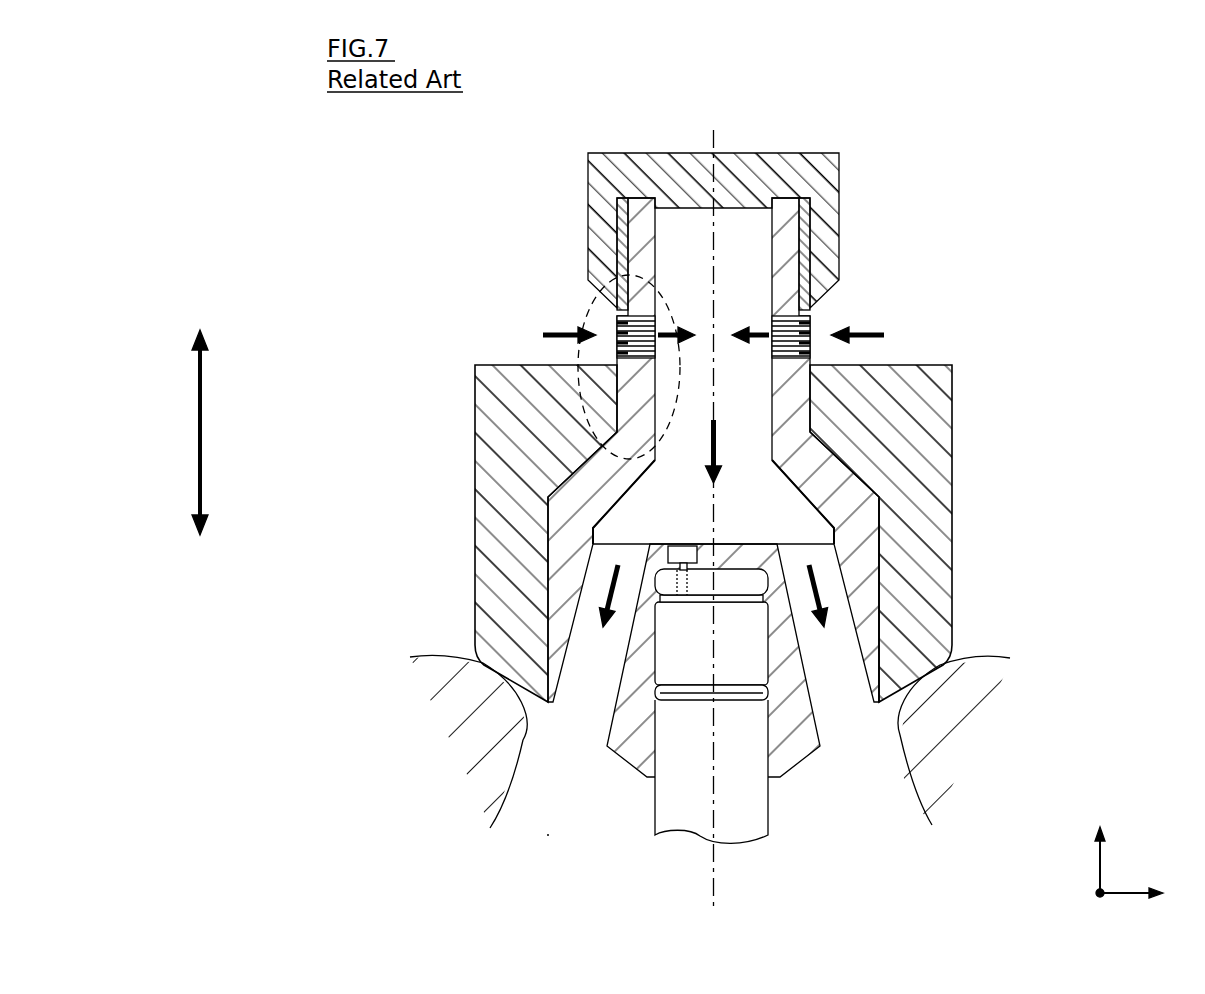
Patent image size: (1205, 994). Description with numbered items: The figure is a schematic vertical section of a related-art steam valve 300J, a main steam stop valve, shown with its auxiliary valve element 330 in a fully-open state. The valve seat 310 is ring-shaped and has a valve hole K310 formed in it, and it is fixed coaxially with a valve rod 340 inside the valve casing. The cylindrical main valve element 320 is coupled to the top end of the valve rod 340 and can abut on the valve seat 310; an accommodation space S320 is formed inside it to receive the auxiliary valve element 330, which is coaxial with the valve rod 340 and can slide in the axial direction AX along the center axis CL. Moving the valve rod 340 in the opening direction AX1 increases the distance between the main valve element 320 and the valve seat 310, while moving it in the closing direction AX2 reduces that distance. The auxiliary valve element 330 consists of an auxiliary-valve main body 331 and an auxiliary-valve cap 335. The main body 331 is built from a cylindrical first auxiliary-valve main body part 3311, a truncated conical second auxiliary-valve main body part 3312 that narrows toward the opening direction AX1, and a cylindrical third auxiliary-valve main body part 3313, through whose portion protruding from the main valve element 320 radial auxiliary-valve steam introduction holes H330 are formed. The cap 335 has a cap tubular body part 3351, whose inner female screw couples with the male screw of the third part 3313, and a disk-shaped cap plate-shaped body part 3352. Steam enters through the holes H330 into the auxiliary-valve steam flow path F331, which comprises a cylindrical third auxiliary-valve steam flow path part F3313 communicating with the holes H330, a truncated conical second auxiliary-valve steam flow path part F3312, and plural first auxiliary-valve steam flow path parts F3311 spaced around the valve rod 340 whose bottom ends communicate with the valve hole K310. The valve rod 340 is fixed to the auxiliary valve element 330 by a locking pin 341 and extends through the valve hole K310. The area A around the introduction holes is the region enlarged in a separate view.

The steam valve 300J is at (740, 54).
The auxiliary valve element 330 is at (1090, 182).
The auxiliary-valve cap 335 is at (1022, 153).
The cap plate-shaped body part 3352 is at (825, 170).
The cap tubular body part 3351 is at (830, 240).
The auxiliary-valve main body 331 is at (1025, 292).
The third auxiliary-valve main body part 3313 is at (812, 314).
The auxiliary-valve steam introduction hole H330 is at (813, 357).
The second auxiliary-valve main body part 3312 is at (852, 485).
The first auxiliary-valve main body part 3311 is at (872, 535).
The main valve element 320 is at (940, 638).
The accommodation space S320 is at (888, 598).
The valve seat 310 is at (982, 733).
The valve rod 340 is at (733, 828).
The locking pin 341 is at (686, 556).
The center axis CL is at (716, 907).
The area A is at (597, 300).
The auxiliary-valve steam flow path F331 is at (375, 248).
The third auxiliary-valve steam flow path part F3313 is at (668, 272).
The second auxiliary-valve steam flow path part F3312 is at (636, 505).
The first auxiliary-valve steam flow path part F3311 is at (580, 650).
The valve hole K310 is at (548, 842).
The axial direction AX is at (195, 433).
The opening direction AX1 is at (193, 326).
The closing direction AX2 is at (198, 542).